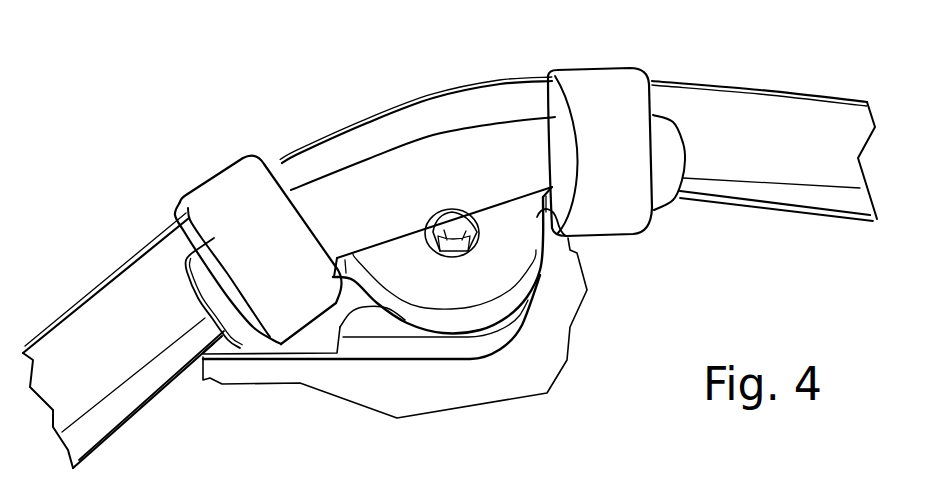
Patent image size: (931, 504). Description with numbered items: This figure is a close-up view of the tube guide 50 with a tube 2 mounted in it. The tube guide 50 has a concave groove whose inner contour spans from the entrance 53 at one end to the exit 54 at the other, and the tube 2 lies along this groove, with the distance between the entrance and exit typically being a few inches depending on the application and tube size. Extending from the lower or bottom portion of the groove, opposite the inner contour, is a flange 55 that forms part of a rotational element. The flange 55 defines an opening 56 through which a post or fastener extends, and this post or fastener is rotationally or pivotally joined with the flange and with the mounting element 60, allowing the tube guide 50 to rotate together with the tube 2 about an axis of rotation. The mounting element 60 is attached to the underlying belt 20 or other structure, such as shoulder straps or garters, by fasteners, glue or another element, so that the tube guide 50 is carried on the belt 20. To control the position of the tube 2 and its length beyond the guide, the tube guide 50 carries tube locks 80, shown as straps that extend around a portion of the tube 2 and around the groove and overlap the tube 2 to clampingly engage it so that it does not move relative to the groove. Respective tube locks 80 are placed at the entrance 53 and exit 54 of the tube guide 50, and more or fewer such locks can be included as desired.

The tube 2 is at (110, 390).
The belt 20 is at (497, 380).
The tube guide 50 is at (478, 167).
The entrance 53 is at (203, 354).
The exit 54 is at (684, 168).
The flange 55 is at (423, 283).
The opening 56 is at (473, 242).
The mounting element 60 is at (358, 328).
The tube lock 80 is at (226, 182).